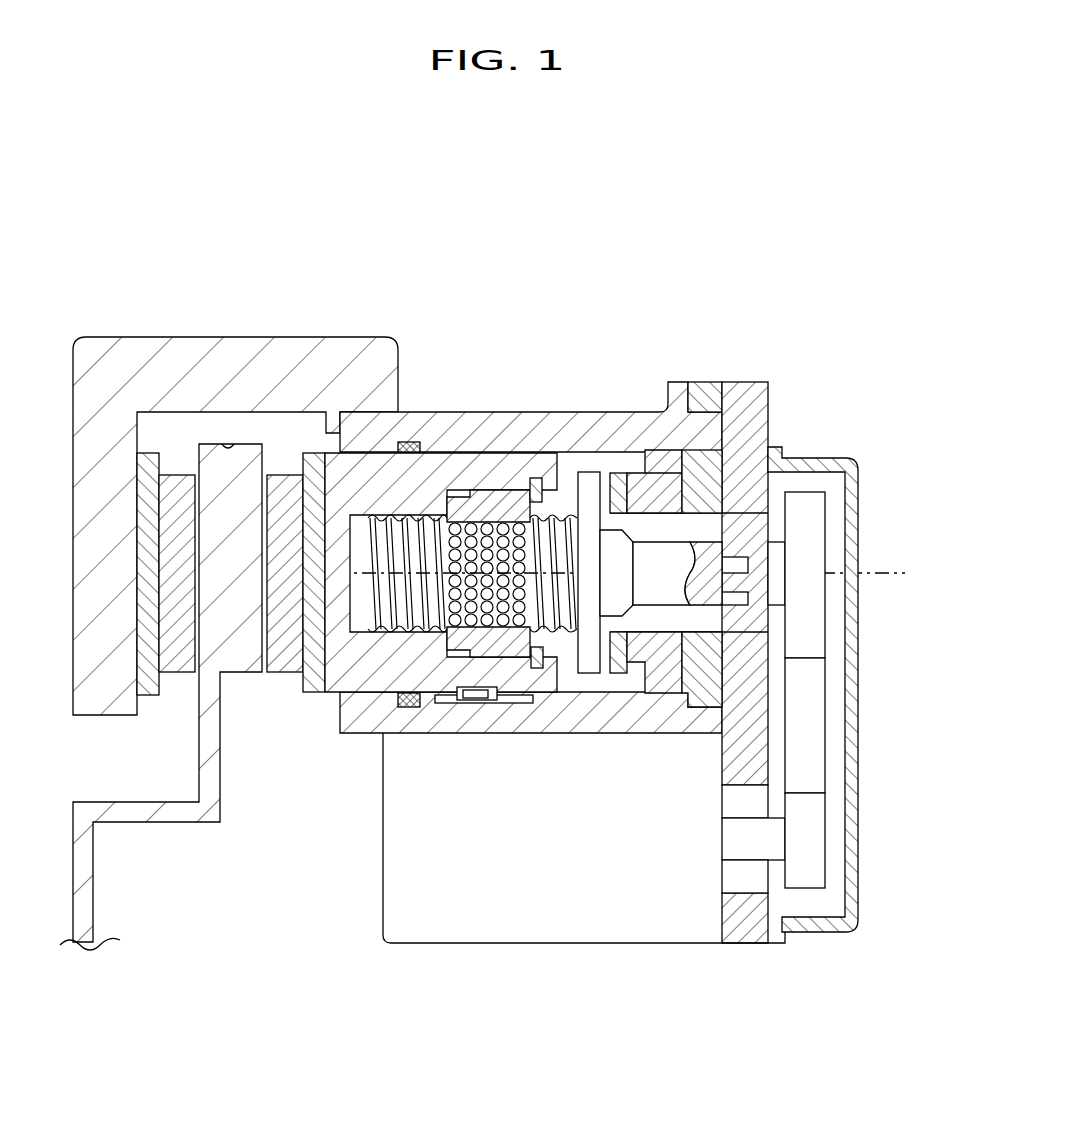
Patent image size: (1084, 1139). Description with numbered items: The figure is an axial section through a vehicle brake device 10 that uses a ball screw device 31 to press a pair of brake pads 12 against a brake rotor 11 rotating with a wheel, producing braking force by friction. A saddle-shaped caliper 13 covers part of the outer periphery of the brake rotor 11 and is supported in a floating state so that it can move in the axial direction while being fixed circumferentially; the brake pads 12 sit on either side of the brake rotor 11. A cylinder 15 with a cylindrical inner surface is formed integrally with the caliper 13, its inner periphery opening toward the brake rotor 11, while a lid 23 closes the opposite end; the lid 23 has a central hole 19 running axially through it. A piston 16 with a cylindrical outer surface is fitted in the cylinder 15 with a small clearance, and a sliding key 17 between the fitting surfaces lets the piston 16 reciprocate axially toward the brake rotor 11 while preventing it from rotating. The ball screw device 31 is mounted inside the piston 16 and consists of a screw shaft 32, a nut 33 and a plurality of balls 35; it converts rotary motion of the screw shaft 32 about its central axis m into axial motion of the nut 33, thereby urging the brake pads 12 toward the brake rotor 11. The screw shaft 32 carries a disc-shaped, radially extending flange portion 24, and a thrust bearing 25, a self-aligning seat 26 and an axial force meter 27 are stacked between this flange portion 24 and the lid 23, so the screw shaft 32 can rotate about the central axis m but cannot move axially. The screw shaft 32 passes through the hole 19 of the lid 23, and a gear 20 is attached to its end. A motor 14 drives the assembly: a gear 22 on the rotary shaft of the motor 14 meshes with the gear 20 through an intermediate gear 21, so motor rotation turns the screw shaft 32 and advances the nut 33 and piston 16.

The brake device 10 is at (828, 310).
The brake rotor 11 is at (228, 450).
The brake pads 12 is at (167, 478).
The caliper 13 is at (353, 347).
The motor 14 is at (547, 933).
The cylinder 15 is at (470, 420).
The piston 16 is at (350, 678).
The sliding key 17 is at (475, 700).
The hole 19 is at (768, 617).
The gear 20 is at (808, 522).
The intermediate gear 21 is at (807, 725).
The gear 22 is at (805, 850).
The lid 23 is at (772, 400).
The flange portion 24 is at (587, 667).
The thrust bearing 25 is at (618, 480).
The self-aligning seat 26 is at (650, 475).
The axial force meter 27 is at (692, 475).
The ball screw device 31 is at (562, 507).
The screw shaft 32 is at (388, 535).
The nut 33 is at (488, 497).
The balls 35 is at (536, 505).
The central axis m is at (648, 540).